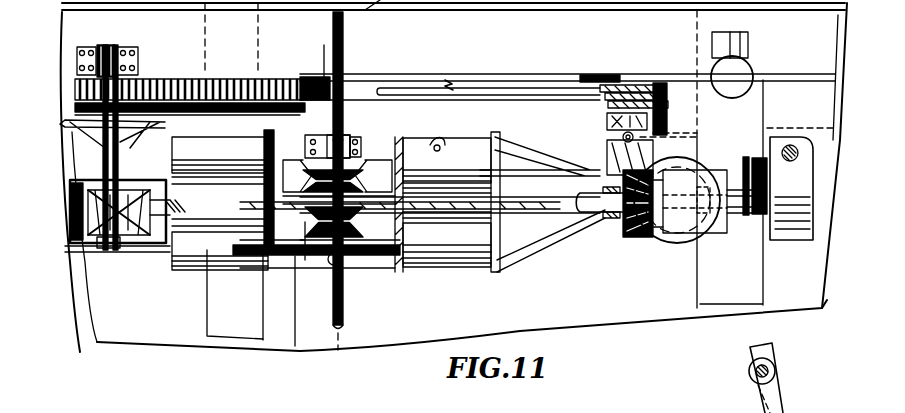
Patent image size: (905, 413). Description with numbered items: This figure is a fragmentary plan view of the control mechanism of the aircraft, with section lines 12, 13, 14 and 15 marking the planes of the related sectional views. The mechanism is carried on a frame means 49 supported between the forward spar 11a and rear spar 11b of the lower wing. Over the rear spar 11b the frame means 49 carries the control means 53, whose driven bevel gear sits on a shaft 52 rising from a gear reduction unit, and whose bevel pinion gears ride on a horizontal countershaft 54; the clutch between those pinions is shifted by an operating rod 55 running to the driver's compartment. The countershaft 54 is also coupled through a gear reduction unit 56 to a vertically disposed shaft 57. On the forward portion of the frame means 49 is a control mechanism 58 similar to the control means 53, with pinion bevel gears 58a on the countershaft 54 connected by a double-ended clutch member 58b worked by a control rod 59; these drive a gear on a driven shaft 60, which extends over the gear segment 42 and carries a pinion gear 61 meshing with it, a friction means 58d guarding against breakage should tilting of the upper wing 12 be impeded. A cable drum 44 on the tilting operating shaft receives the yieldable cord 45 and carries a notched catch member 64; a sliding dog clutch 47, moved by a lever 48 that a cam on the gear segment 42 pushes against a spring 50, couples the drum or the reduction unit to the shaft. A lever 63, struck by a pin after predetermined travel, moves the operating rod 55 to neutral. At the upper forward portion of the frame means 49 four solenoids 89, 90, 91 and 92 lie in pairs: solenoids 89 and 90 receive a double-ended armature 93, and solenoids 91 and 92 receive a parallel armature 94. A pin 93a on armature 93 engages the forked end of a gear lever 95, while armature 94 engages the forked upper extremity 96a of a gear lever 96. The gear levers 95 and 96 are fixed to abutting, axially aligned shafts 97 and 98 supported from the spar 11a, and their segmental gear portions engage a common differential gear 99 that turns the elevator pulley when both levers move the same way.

The spar 11a is at (227, 320).
The spar 11b is at (720, 290).
The upper wing 12 is at (578, 146).
The section line 13- 13 is at (338, 50).
The section line 14- 14 is at (393, 335).
The section line 15- 15 is at (753, 105).
The gear segment 42 is at (258, 78).
The cable drum 44 is at (628, 83).
The yieldable cord 45 is at (385, 88).
The dog clutch 47 is at (600, 128).
The lever 48 is at (508, 142).
The frame means 49 is at (555, 255).
The spring 50 is at (450, 82).
The shaft 52 is at (183, 258).
The control means 53 is at (635, 232).
The countershaft 54 is at (580, 222).
The operating rod 55 is at (733, 240).
The gear reduction unit 56 is at (757, 245).
The vertically disposed shaft 57 is at (780, 140).
The control mechanism 58 is at (112, 141).
The pinion bevel gears 58a is at (130, 252).
The double-ended clutch member 58b is at (78, 255).
The friction means 58d is at (187, 79).
The control rod 59 is at (97, 360).
The driven shaft 60 is at (143, 78).
The pinion gear 61 is at (142, 72).
The lever 63 is at (745, 175).
The catch member 64 is at (592, 73).
The solenoid 89 is at (220, 160).
The solenoid 90 is at (447, 202).
The solenoid 91 is at (220, 244).
The solenoid 92 is at (447, 239).
The double-ended armature 93 is at (372, 162).
The pin 93a is at (347, 267).
The double-ended armature 94 is at (303, 220).
The gear lever 95 is at (306, 140).
The gear lever 96 is at (318, 245).
The forked upper extremity 96a is at (340, 270).
The shaft 97 is at (326, 48).
The shaft 98 is at (330, 335).
The differential gear 99 is at (252, 283).